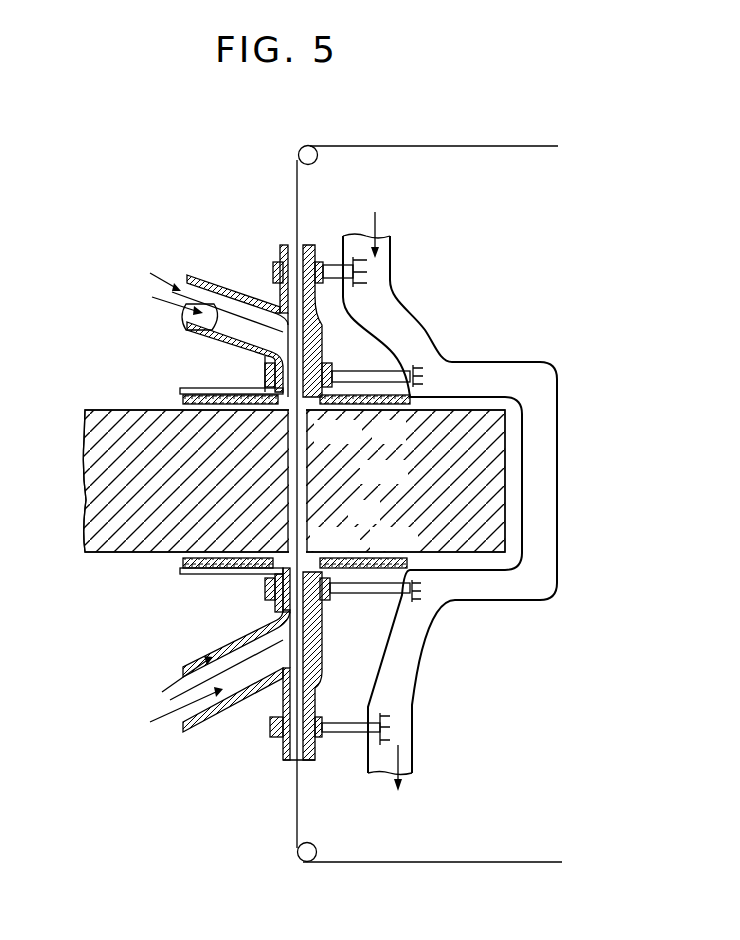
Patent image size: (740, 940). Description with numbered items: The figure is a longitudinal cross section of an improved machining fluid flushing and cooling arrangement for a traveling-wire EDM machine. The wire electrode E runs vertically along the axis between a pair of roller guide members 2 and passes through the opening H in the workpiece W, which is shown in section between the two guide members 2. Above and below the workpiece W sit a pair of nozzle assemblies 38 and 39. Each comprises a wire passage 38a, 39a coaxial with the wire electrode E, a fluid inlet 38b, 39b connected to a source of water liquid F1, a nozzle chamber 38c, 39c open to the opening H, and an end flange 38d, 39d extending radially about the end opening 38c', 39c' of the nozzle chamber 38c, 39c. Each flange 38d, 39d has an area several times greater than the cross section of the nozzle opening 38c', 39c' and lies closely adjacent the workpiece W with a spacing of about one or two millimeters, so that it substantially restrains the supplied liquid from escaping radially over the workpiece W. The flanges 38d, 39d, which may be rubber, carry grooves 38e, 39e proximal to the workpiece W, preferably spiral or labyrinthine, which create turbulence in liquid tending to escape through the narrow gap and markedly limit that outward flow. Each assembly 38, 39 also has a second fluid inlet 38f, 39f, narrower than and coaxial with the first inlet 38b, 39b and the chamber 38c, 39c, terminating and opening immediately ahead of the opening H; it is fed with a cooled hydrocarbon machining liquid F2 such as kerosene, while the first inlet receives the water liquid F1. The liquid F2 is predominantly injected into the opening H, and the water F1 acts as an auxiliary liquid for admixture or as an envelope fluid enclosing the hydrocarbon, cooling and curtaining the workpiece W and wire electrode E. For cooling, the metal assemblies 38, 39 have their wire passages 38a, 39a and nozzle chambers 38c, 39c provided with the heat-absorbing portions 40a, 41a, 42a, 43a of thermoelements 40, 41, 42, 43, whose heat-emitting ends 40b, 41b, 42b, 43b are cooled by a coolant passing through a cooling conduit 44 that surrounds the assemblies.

The guide member 2 is at (298, 156).
The wire electrode E is at (433, 146).
The workpiece W is at (105, 486).
The opening in the workpiece H is at (290, 482).
The nozzle assembly 38 is at (350, 346).
The wire passage 38a is at (300, 250).
The fluid inlet 38b is at (227, 290).
The nozzle chamber 38c is at (237, 369).
The end opening of the nozzle chamber 38c' is at (339, 404).
The end flange 38d is at (262, 390).
The grooves 38e is at (185, 404).
The second fluid inlet 38f is at (184, 323).
The nozzle assembly 39 is at (356, 666).
The wire passage 39a is at (284, 762).
The fluid inlet 39b is at (236, 660).
The nozzle chamber 39c is at (249, 593).
The end opening of the nozzle chamber 39c' is at (334, 563).
The end flange 39d is at (236, 572).
The grooves 39e is at (185, 566).
The second fluid inlet 39f is at (168, 724).
The thermoelement 40 is at (338, 265).
The heat-absorbing portion 40a is at (270, 262).
The heat-emitting end 40b is at (393, 274).
The thermoelement 41 is at (338, 725).
The heat-absorbing portion 41a is at (318, 742).
The heat-emitting end 41b is at (402, 710).
The thermoelement 42 is at (317, 852).
The heat-absorbing portion 42a is at (336, 376).
The heat-emitting end 42b is at (422, 330).
The thermoelement 43 is at (368, 566).
The heat-absorbing portion 43a is at (362, 584).
The heat-emitting end 43b is at (430, 606).
The cooling conduit 44 is at (557, 478).
The water liquid F1 is at (152, 275).
The hydrocarbon machining liquid F2 is at (150, 280).